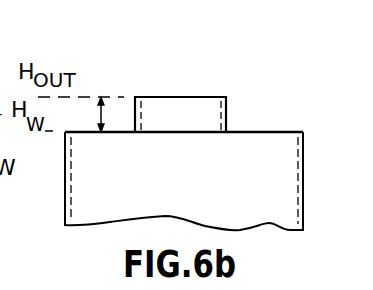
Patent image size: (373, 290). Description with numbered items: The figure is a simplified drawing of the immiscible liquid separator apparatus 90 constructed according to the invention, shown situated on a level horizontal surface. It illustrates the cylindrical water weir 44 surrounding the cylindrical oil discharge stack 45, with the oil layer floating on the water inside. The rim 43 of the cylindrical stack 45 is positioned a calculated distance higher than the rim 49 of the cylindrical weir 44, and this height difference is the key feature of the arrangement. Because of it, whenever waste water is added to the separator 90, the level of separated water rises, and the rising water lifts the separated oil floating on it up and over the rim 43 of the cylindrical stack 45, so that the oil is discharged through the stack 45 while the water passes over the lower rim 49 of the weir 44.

The immiscible liquid separator apparatus 90 is at (198, 43).
The rim of the cylindrical stack 43 is at (228, 97).
The cylindrical oil discharge stack 45 is at (226, 112).
The rim of the cylindrical weir 49 is at (299, 130).
The cylindrical water weir 44 is at (303, 172).